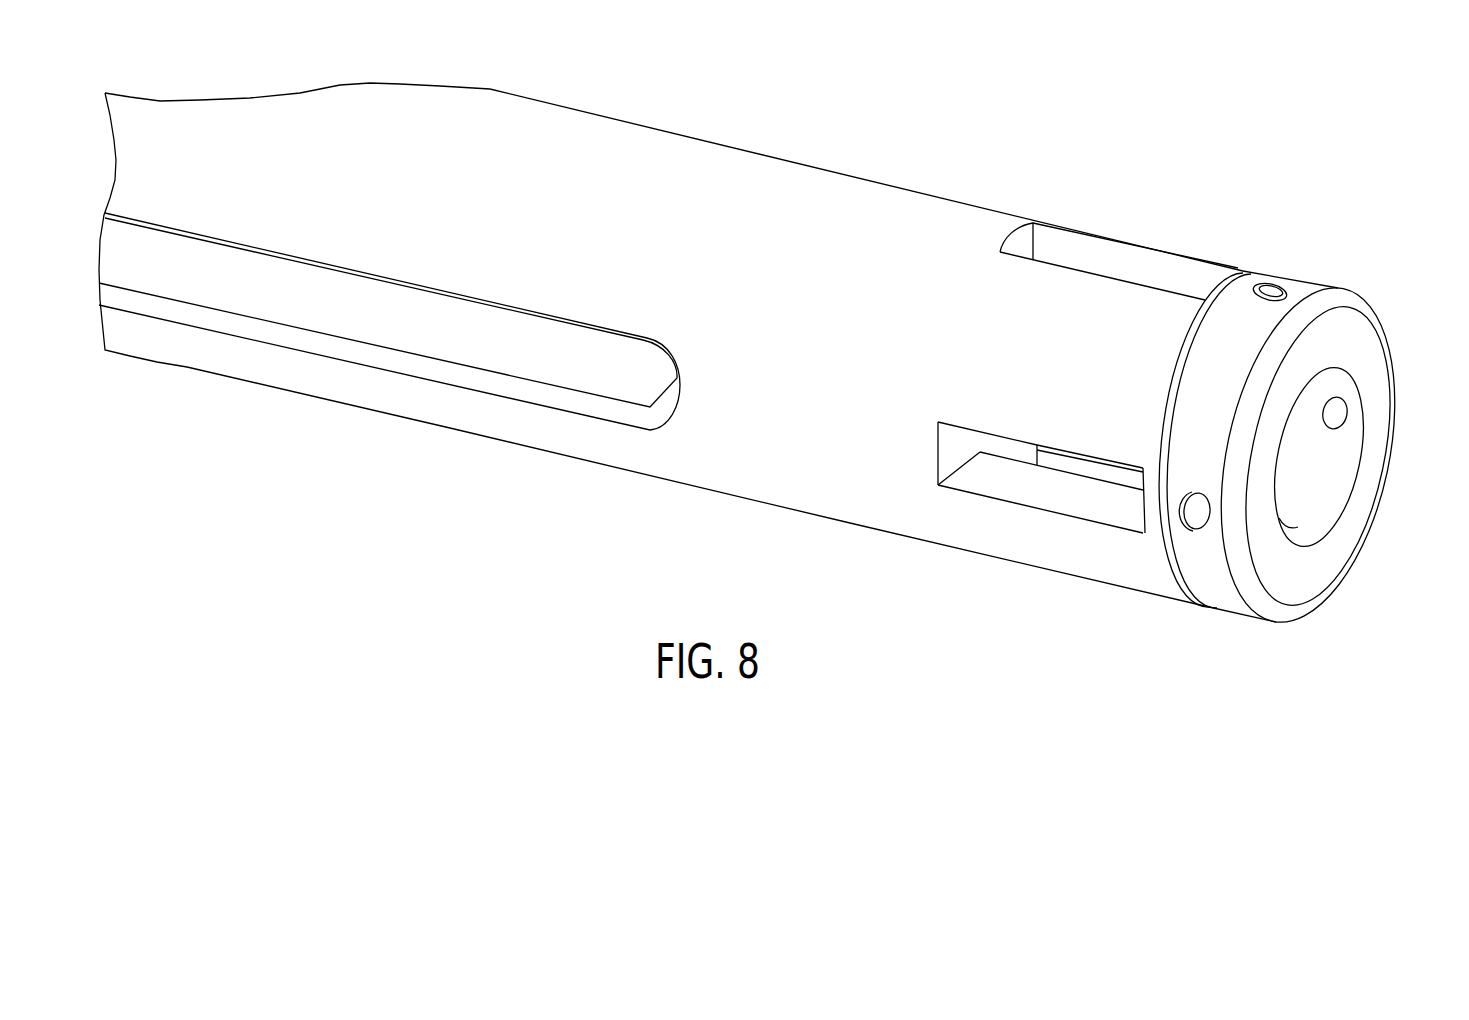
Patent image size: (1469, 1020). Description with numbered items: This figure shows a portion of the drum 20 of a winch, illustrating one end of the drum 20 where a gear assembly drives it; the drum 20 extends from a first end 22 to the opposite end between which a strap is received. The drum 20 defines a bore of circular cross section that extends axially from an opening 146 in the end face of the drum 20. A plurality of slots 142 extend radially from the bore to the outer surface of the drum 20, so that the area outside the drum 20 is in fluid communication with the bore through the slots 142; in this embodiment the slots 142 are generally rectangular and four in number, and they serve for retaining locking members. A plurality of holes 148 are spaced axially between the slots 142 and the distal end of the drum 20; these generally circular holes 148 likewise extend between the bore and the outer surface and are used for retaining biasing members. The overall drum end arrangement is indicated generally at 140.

The drum 20 is at (925, 200).
The first end 22 is at (1353, 333).
The assembly 140 is at (1050, 130).
The slots 142 is at (1105, 250).
The opening 146 is at (1335, 493).
The holes 148 is at (1277, 290).